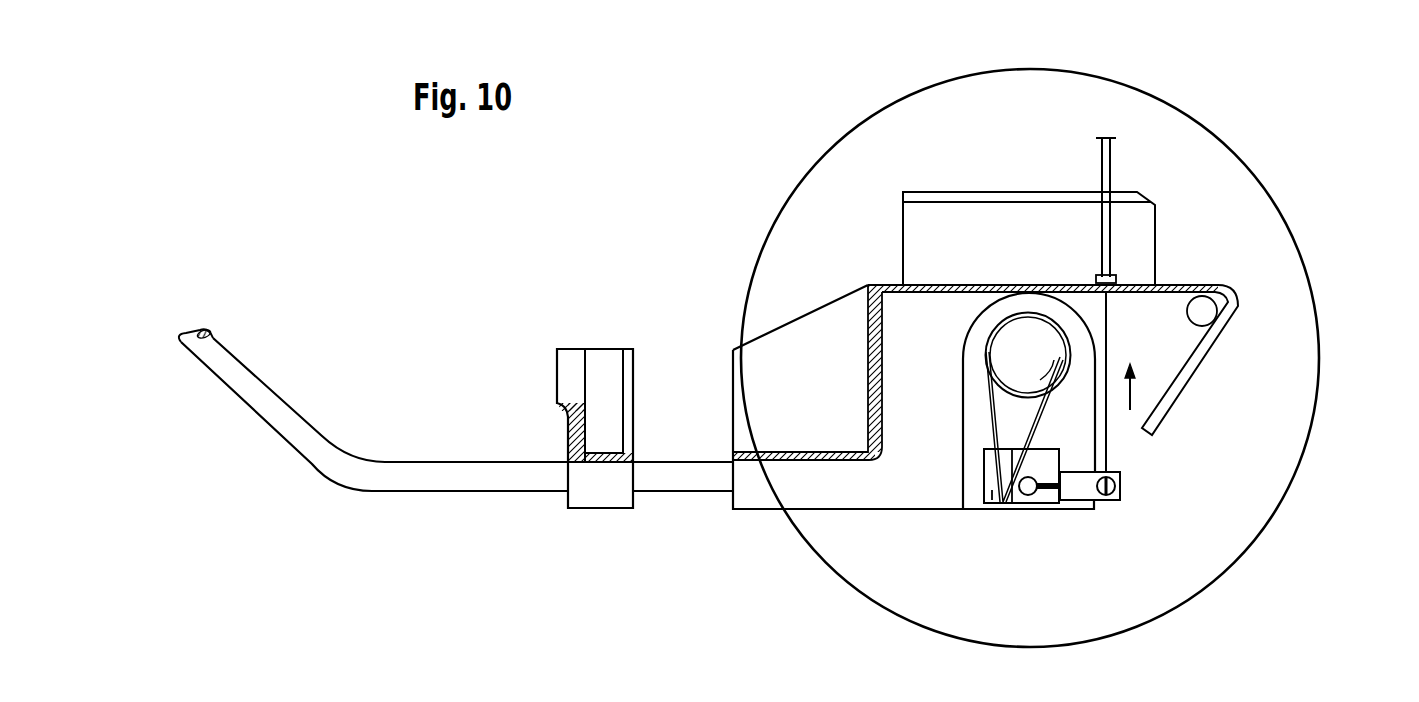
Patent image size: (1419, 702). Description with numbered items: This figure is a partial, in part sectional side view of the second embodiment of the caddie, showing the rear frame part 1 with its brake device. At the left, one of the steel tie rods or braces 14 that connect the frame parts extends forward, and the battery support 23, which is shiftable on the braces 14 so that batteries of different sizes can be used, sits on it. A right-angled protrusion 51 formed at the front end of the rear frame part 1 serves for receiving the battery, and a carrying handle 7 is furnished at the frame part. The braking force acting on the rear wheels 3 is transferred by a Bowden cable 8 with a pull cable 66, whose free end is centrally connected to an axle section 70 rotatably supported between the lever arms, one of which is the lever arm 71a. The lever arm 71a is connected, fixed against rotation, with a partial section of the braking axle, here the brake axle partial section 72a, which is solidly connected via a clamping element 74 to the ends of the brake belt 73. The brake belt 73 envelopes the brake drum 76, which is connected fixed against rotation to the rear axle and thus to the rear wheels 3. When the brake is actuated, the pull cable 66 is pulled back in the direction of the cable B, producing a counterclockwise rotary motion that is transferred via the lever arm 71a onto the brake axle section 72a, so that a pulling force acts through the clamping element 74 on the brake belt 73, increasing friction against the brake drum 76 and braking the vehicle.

The rear frame part 1 is at (1216, 218).
The rear wheels 3 is at (1190, 152).
The carrying handle 7 is at (1240, 302).
The Bowden cable 8 is at (1112, 142).
The tie rods or braces 14 is at (253, 390).
The battery support 23 is at (570, 355).
The right-angled protrusion 51 is at (876, 425).
The pull cable 66 is at (1108, 342).
The axle section 70 is at (1122, 487).
The lever arm 71a is at (1097, 500).
The brake axle partial section 72a is at (1036, 493).
The brake belt 73 is at (1040, 420).
The clamping element 74 is at (992, 495).
The brake drum 76 is at (1013, 375).
The direction of the cable B is at (1133, 397).